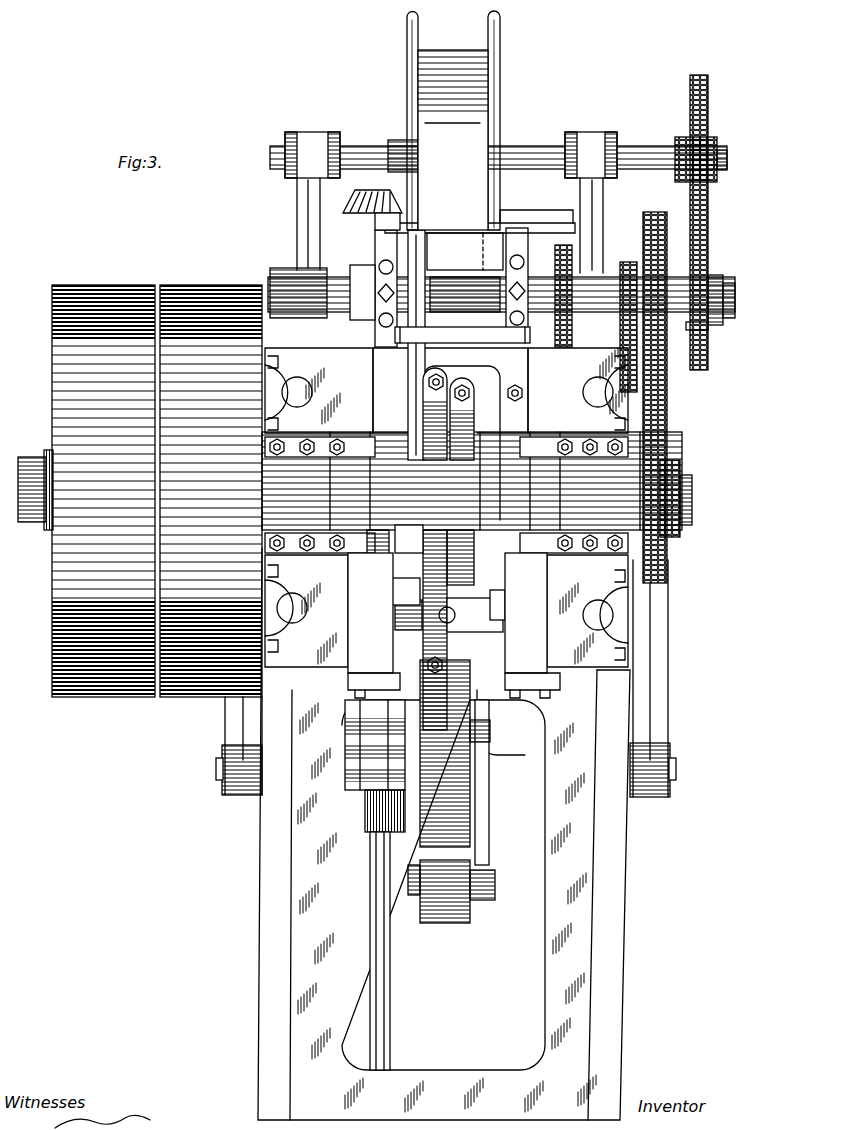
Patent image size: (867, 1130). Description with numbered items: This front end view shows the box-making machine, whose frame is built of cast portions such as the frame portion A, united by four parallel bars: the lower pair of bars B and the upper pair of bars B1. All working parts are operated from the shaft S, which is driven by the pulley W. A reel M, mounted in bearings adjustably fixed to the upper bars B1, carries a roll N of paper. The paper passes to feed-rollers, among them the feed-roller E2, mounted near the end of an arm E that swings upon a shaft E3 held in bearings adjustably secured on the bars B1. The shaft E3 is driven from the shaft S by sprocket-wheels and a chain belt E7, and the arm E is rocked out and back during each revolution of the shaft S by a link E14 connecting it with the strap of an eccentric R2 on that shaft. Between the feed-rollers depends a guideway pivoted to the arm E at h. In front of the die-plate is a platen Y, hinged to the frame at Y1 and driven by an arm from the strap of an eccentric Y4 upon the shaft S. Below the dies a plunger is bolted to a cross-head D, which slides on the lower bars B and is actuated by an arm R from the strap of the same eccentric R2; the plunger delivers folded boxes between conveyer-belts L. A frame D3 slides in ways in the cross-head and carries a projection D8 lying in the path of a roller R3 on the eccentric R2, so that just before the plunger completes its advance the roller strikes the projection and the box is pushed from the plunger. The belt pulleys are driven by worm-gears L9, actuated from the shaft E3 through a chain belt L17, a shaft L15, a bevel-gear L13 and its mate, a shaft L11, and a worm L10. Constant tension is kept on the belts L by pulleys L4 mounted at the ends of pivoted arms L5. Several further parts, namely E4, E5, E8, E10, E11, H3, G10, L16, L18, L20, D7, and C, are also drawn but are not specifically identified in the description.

The frame portion A is at (444, 734).
The pulley W is at (183, 292).
The shaft S is at (693, 492).
The gear E8 is at (680, 462).
The upper bar B1 is at (446, 390).
The lower bar B is at (446, 611).
The arm E is at (358, 272).
The hub E4 is at (297, 278).
The feed-roller E2 is at (378, 265).
The bracket gear E11 is at (555, 256).
The link E14 is at (480, 280).
The housing E10 is at (520, 262).
The vertical bar H3 is at (431, 345).
The pivot h is at (495, 336).
The gear G10 is at (628, 268).
The chain belt E7 is at (670, 380).
The collar L18 is at (716, 276).
The shaft E3 is at (735, 296).
The collar E5 is at (705, 325).
The shaft L15 is at (625, 150).
The bearing L16 is at (286, 138).
The reel M is at (398, 146).
The roll of paper N is at (453, 120).
The gear L20 is at (718, 142).
The chain belt L17 is at (709, 198).
The bevel-gear L13 is at (343, 194).
The platen Y is at (210, 727).
The platen hinge Y1 is at (218, 770).
The eccentric Y4 is at (504, 545).
The arm R is at (457, 565).
The eccentric R2 is at (380, 545).
The roller R3 is at (395, 615).
The projection D8 is at (400, 588).
The frame D3 is at (471, 615).
The block D7 is at (505, 605).
The cross-head D is at (447, 613).
The bracket C is at (348, 683).
The conveyer-belt L is at (470, 814).
The arm L5 is at (490, 842).
The tension pulley L4 is at (470, 898).
The worm L10 is at (350, 770).
The worm-gear L9 is at (400, 835).
The shaft L11 is at (392, 905).